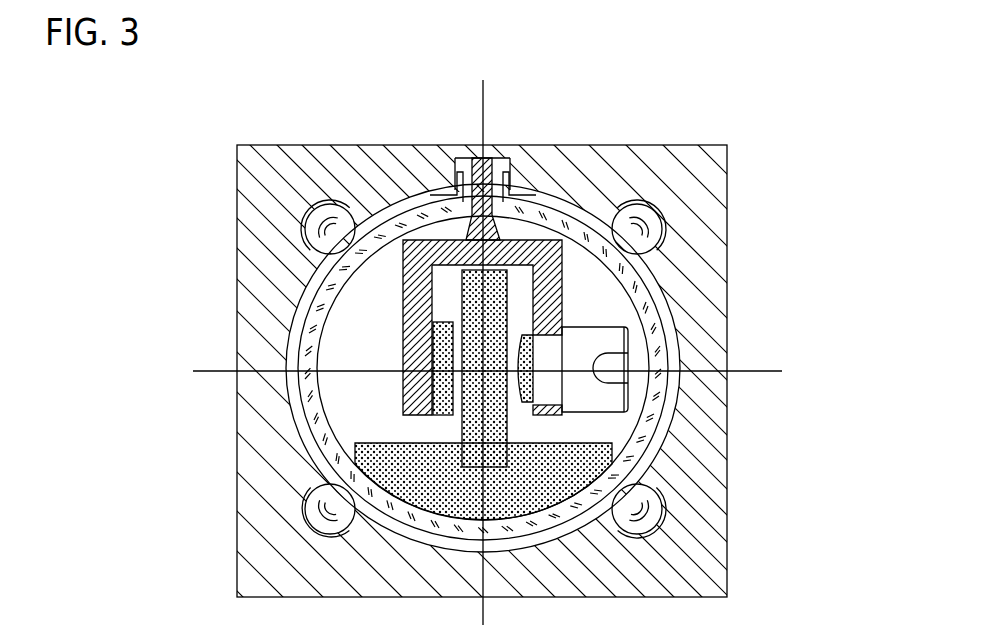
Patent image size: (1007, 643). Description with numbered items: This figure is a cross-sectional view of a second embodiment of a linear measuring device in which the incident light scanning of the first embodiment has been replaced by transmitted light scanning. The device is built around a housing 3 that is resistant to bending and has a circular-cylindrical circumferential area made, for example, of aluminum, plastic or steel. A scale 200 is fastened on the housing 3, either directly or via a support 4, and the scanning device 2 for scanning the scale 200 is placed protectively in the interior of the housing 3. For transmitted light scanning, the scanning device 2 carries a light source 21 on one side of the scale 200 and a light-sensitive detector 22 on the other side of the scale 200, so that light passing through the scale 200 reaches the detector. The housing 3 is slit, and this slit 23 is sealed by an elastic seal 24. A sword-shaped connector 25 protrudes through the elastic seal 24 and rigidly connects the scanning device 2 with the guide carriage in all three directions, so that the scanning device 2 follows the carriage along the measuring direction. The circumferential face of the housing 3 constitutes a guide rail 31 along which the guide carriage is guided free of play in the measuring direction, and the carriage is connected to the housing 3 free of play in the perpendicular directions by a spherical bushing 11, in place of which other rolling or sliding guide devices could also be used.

The scanning device 2 is at (382, 328).
The housing 3 is at (664, 297).
The support 4 is at (575, 458).
The spherical bushing 11 is at (645, 210).
The light source 21 is at (607, 342).
The light-sensitive detector 22 is at (440, 384).
The slit 23 is at (546, 195).
The elastic seal 24 is at (533, 192).
The sword-shaped connector 25 is at (481, 160).
The guide rail 31 is at (648, 270).
The scale 200 is at (512, 425).